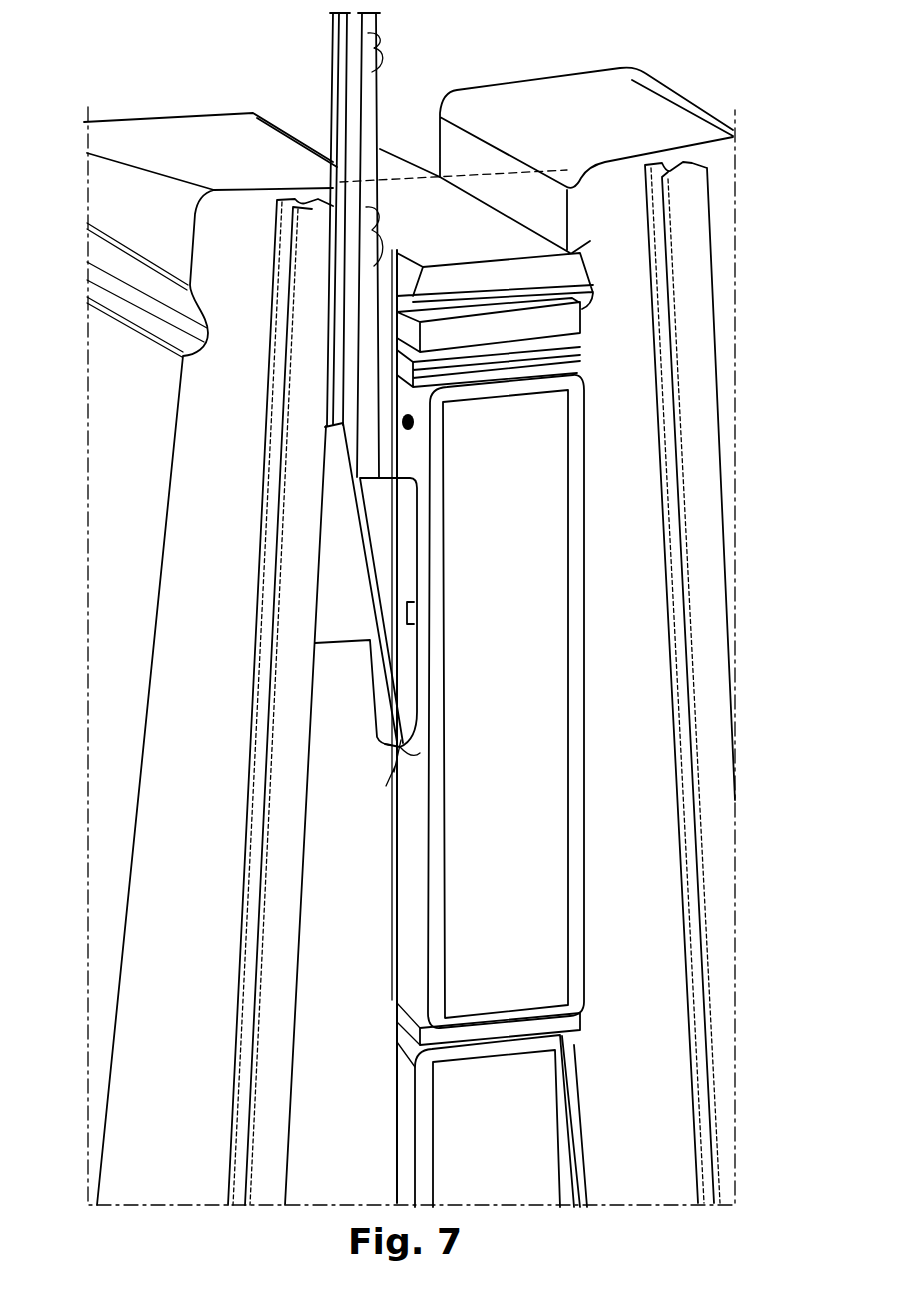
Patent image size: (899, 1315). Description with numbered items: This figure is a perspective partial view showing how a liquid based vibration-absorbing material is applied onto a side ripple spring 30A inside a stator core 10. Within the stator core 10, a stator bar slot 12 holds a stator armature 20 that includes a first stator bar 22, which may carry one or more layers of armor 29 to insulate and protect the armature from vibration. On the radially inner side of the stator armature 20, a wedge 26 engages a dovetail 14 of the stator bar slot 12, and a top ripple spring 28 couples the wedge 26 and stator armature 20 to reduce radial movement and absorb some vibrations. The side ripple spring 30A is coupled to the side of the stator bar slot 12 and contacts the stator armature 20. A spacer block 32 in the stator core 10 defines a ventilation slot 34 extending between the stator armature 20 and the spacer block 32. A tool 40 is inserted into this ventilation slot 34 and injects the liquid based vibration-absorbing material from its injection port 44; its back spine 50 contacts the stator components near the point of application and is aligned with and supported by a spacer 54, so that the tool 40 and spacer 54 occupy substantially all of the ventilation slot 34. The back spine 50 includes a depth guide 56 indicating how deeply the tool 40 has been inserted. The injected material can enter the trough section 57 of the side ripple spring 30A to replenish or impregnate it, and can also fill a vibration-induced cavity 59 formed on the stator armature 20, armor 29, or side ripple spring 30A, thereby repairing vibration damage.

The stator core 10 is at (182, 147).
The stator bar slot 12 is at (470, 226).
The dovetail 14 is at (583, 308).
The stator armature 20 is at (572, 1002).
The first stator bar 22 is at (525, 745).
The wedge 26 is at (476, 220).
The top ripple spring 28 is at (565, 338).
The armor 29 is at (573, 914).
The side ripple spring 30A is at (420, 753).
The spacer block 32 is at (245, 1063).
The ventilation slot 34 is at (617, 478).
The tool 40 is at (398, 713).
The injection port 44 is at (407, 617).
The back spine 50 is at (367, 390).
The spacer 54 is at (340, 544).
The depth guide 56 is at (383, 113).
The trough section 57 is at (410, 753).
The vibration-induced cavity 59 is at (413, 428).